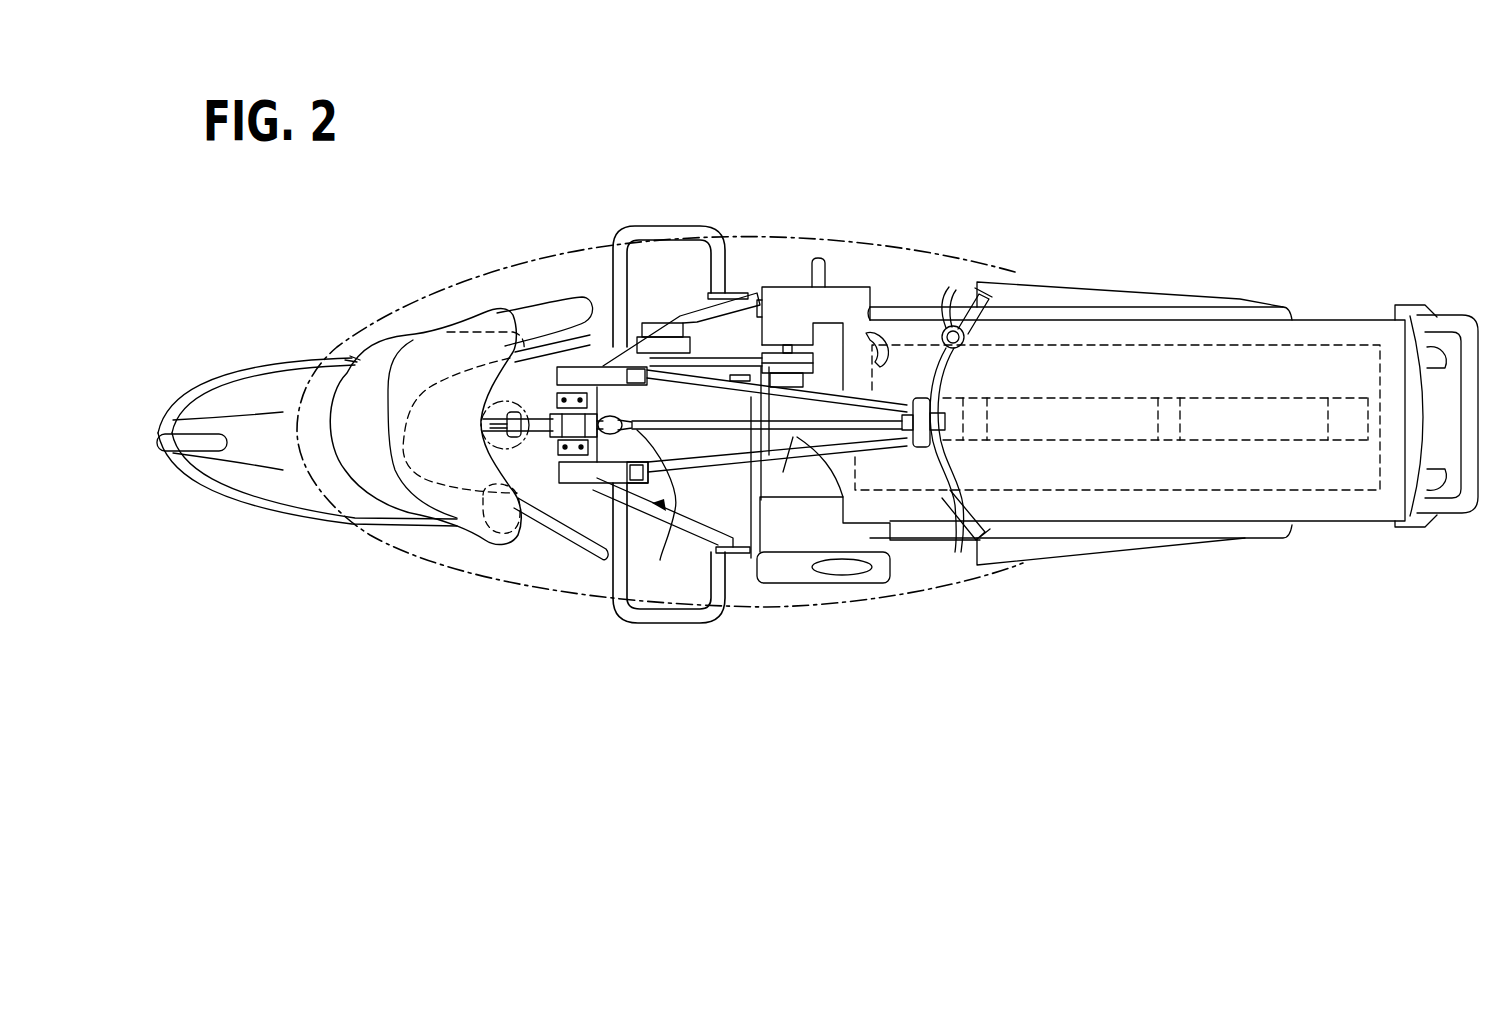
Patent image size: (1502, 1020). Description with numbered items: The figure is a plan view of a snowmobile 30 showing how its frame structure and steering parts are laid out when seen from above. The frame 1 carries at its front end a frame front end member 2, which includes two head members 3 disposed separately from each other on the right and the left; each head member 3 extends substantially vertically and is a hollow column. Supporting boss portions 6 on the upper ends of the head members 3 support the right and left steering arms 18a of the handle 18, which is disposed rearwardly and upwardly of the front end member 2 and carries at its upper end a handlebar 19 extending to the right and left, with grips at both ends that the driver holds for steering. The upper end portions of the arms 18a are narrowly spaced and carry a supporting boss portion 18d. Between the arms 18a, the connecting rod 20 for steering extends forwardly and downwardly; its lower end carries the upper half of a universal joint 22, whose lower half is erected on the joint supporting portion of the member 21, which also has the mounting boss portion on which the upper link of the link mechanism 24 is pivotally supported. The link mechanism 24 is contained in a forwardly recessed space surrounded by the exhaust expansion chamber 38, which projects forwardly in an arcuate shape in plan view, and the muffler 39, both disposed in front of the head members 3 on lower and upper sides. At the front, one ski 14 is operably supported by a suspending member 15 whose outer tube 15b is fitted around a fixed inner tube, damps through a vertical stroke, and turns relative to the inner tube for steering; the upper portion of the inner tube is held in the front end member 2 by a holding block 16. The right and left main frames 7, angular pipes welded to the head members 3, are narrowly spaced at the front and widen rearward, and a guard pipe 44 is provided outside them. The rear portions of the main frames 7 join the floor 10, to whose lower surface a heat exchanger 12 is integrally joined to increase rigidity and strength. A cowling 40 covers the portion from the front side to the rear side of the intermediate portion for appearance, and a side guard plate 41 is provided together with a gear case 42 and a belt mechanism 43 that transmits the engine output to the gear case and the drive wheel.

The frame 1 is at (595, 487).
The frame front end member 2 is at (550, 395).
The head member 3 is at (605, 365).
The supporting boss portion 6 is at (638, 337).
The main frame 7 is at (700, 310).
The floor 10 is at (1183, 328).
The heat exchanger 12 is at (1323, 338).
The ski 14 is at (268, 488).
The suspending member 15 is at (475, 427).
The outer tube 15b is at (476, 460).
The holding block 16 is at (525, 360).
The handle 18 is at (960, 467).
The steering arm 18a is at (826, 390).
The supporting boss portion 18d is at (946, 413).
The handlebar 19 is at (987, 373).
The connecting rod 20 is at (753, 470).
The joint support member 21 is at (607, 345).
The universal joint 22 is at (637, 520).
The link mechanism 24 is at (538, 408).
The snowmobile 30 is at (1003, 183).
The exhaust expansion chamber 38 is at (360, 462).
The muffler 39 is at (417, 367).
The cowling 40 is at (567, 252).
The side guard plate 41 is at (1107, 304).
The gear case 42 is at (820, 300).
The belt mechanism 43 is at (737, 360).
The guard pipe 44 is at (700, 235).